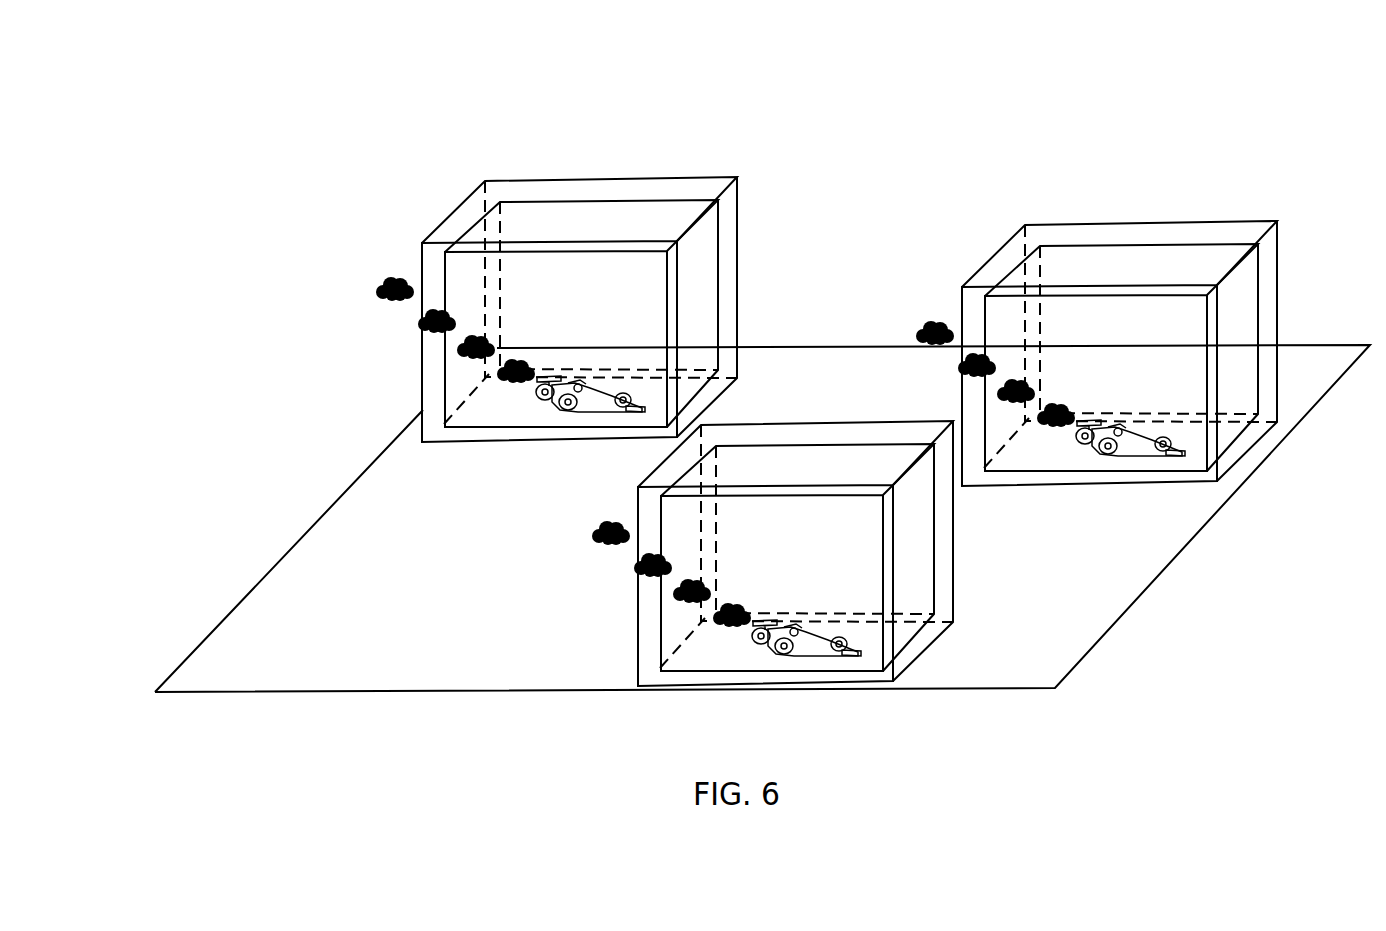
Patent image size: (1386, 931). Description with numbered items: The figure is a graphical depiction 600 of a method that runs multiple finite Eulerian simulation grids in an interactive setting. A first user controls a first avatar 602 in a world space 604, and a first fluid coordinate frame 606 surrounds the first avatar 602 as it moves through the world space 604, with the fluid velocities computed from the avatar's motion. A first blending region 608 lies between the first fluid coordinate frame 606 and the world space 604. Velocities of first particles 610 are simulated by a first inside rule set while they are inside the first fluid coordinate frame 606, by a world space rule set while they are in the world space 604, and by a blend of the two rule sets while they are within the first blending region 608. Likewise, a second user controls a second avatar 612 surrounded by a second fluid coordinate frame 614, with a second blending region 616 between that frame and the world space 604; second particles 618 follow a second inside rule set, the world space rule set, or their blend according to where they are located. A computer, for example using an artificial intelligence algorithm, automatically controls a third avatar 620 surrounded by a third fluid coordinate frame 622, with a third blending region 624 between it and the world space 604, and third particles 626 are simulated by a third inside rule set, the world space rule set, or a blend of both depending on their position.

The graphical depiction 600 is at (271, 108).
The first avatar 602 is at (578, 372).
The world space 604 is at (313, 660).
The first fluid coordinate frame 606 is at (578, 198).
The first blending region 608 is at (677, 178).
The first particles 610 is at (514, 384).
The second avatar 612 is at (1152, 452).
The second fluid coordinate frame 614 is at (1230, 445).
The second blending region 616 is at (1083, 485).
The second particles 618 is at (1053, 403).
The third avatar 620 is at (830, 653).
The third fluid coordinate frame 622 is at (848, 667).
The third blending region 624 is at (935, 638).
The third particles 626 is at (732, 622).